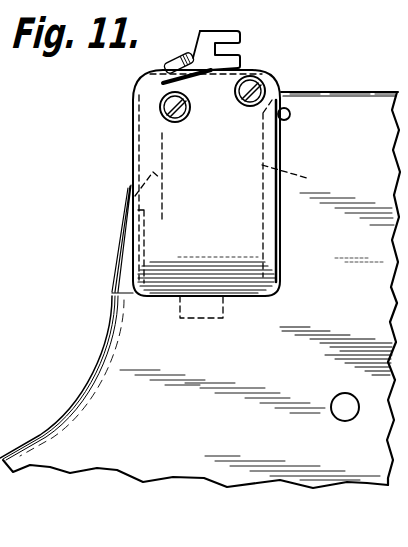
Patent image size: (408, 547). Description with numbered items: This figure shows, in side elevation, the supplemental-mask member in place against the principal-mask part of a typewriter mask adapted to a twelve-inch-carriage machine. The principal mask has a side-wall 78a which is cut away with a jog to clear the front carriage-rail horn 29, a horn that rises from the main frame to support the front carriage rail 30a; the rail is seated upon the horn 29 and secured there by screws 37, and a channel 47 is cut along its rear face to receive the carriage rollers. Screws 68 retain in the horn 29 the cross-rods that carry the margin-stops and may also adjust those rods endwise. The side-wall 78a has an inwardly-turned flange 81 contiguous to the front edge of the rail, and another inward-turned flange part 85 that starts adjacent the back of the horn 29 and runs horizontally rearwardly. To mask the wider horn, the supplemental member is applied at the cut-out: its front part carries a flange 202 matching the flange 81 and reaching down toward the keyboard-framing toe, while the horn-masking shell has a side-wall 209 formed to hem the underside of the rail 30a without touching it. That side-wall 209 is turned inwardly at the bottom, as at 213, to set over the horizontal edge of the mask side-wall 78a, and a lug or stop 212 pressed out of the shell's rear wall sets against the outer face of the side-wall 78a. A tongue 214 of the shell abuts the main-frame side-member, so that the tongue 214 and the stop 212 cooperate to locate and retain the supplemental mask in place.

The carriage rail 30a is at (204, 44).
The screws 37 is at (165, 66).
The channel 47 is at (235, 51).
The screws 68 is at (247, 110).
The horizontal flange part 85 is at (337, 92).
The lug or stop 212 is at (289, 119).
The horn 29 is at (298, 177).
The side-wall of horn-masking shell 209 is at (245, 203).
The flange 202 is at (125, 258).
The inwardly-turned flange 81 is at (87, 387).
The tongue 214 is at (182, 317).
The inturned bottom 213 is at (232, 272).
The side-wall 78a is at (178, 452).